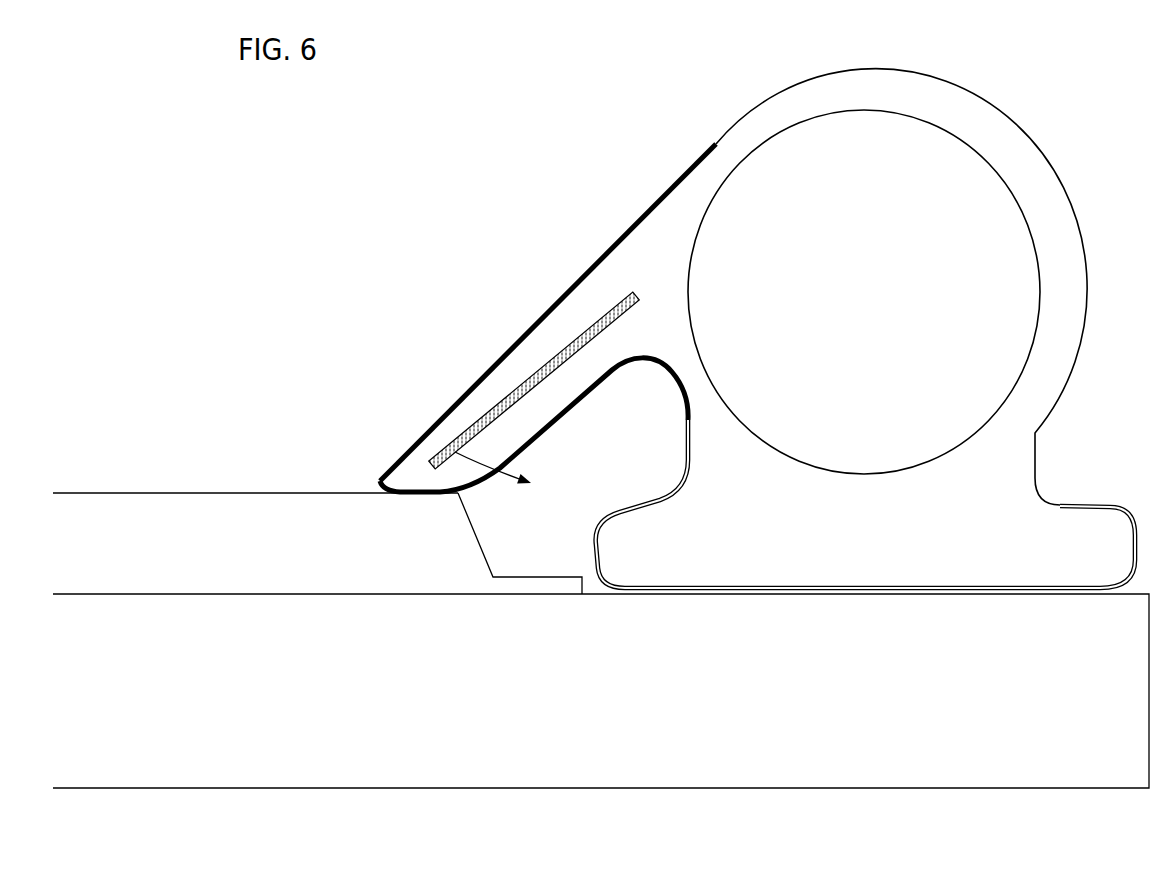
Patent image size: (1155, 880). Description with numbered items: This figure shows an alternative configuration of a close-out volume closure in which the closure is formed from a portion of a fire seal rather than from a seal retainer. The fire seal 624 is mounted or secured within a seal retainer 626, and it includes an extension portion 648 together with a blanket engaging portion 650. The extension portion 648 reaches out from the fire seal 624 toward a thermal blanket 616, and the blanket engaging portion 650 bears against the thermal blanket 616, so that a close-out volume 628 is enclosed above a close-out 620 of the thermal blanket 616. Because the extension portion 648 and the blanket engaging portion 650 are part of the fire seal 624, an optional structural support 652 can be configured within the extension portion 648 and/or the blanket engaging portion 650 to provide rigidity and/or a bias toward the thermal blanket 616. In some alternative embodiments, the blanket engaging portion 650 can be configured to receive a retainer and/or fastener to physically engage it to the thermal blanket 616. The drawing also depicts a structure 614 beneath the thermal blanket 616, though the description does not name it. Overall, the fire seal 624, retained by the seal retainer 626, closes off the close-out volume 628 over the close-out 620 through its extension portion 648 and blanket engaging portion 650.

The base substrate 614 is at (188, 622).
The thermal blanket 616 is at (238, 505).
The close-out 620 is at (552, 572).
The fire seal 624 is at (773, 455).
The seal retainer 626 is at (742, 587).
The close-out volume 628 is at (455, 452).
The extension portion 648 is at (530, 347).
The blanket engaging portion 650 is at (403, 480).
The structural support 652 is at (500, 405).